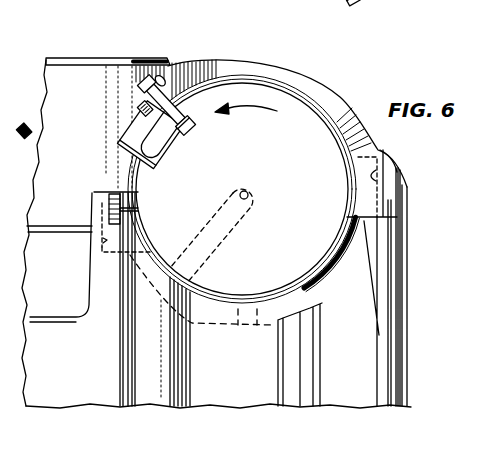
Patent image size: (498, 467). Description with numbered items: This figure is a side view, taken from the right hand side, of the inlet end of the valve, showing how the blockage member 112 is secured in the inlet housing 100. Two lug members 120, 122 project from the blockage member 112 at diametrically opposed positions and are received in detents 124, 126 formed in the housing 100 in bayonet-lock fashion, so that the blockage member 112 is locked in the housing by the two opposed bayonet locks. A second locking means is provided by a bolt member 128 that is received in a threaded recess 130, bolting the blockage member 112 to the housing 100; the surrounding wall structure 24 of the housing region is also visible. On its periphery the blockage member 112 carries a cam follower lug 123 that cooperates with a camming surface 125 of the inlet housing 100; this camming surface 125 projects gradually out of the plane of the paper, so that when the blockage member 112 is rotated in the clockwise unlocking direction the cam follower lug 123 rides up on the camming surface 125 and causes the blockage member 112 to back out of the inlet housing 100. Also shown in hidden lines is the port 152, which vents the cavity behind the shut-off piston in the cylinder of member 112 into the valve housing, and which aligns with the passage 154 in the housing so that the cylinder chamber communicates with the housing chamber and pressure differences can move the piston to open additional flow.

The housing body 24 is at (82, 157).
The inlet housing 100 is at (249, 68).
The blockage member 112 is at (284, 106).
The lug member 120 is at (133, 136).
The lug member 122 is at (335, 275).
The cam follower lug 123 is at (328, 104).
The detent 124 is at (102, 252).
The camming surface 125 is at (360, 127).
The detent 126 is at (380, 176).
The bolt member 128 is at (163, 90).
The threaded recess 130 is at (107, 195).
The port 152 is at (226, 227).
The passage 154 is at (236, 316).